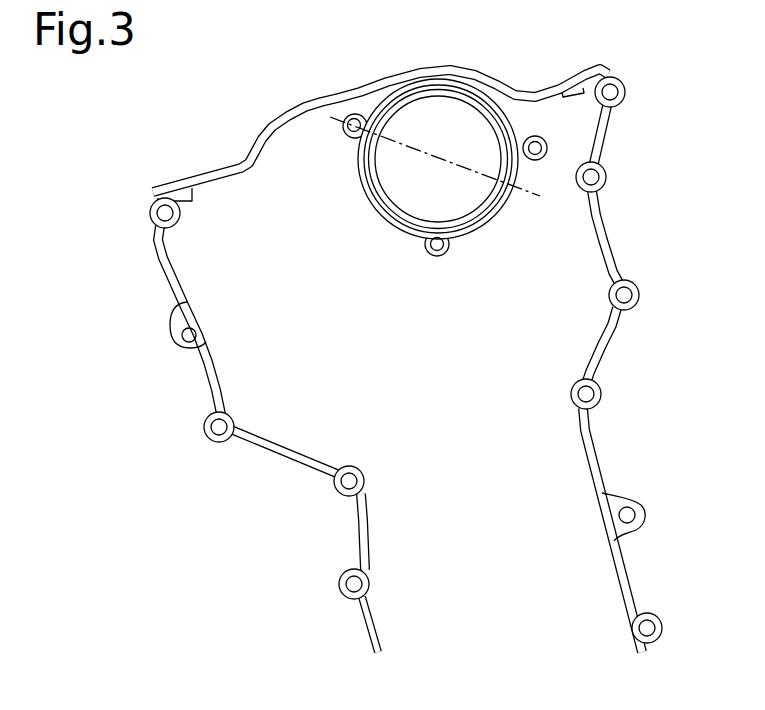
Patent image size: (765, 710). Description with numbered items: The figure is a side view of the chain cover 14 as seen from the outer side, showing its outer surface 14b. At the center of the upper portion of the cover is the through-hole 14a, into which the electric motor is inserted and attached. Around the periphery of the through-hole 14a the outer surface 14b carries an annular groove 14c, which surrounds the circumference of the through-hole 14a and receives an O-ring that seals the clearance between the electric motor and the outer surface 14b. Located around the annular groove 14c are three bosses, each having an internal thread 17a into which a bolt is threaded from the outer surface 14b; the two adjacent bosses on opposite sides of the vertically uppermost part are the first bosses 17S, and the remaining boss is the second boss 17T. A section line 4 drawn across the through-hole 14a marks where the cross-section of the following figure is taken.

The section line 4- 4 is at (333, 116).
The chain cover 14 is at (410, 360).
The through-hole 14a is at (400, 204).
The outer surface 14b is at (562, 330).
The annular groove 14c is at (490, 216).
The internal thread 17a is at (383, 118).
The first boss 17S is at (362, 144).
The second boss 17T is at (452, 240).